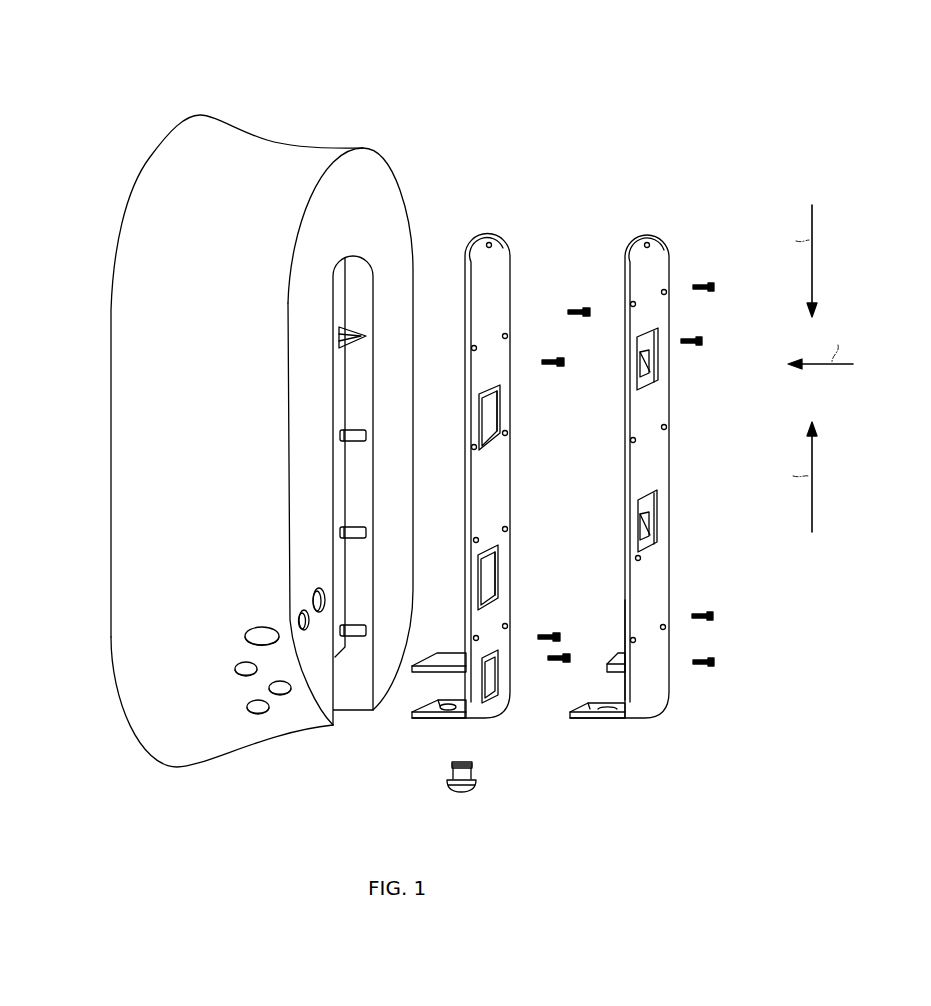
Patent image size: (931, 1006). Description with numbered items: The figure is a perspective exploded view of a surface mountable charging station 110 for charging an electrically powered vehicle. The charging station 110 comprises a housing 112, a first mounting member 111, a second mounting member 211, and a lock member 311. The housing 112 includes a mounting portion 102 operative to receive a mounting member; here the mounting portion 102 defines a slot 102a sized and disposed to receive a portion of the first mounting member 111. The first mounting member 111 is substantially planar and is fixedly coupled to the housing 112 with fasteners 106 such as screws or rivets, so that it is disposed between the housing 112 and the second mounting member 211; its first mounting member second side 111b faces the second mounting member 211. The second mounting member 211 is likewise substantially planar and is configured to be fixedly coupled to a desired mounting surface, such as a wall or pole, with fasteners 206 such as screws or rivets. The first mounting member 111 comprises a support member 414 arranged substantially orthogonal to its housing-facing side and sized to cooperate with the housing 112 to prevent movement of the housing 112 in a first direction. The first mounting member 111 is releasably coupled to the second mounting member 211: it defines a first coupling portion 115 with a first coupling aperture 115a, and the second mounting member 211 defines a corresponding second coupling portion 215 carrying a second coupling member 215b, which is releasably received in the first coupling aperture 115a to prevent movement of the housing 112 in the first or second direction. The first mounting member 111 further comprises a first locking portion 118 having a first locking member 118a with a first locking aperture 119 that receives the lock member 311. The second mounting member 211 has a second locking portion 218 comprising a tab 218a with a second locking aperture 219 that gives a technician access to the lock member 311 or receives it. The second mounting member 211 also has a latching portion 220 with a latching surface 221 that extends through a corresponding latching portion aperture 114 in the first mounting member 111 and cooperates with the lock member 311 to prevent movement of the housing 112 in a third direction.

The charging station 110 is at (136, 66).
The housing 112 is at (108, 310).
The mounting portion 102 is at (345, 690).
The slot 102a is at (363, 482).
The first mounting member 111 is at (502, 233).
The first mounting member second side 111b is at (495, 297).
The first coupling portion 115 is at (470, 423).
The first coupling aperture 115a is at (488, 420).
The latching portion aperture 114 is at (498, 703).
The support member 414 is at (442, 657).
The first locking portion 118 is at (417, 728).
The first locking member 118a is at (443, 723).
The first locking aperture 119 is at (453, 703).
The fasteners 106 is at (582, 307).
The lock member 311 is at (475, 788).
The second mounting member 211 is at (663, 245).
The second coupling portion 215 is at (660, 360).
The second coupling member 215b is at (660, 373).
The latching portion 220 is at (618, 625).
The latching surface 221 is at (615, 660).
The second locking portion 218 is at (582, 727).
The tab 218a is at (600, 720).
The second locking aperture 219 is at (613, 700).
The fasteners 206 is at (715, 287).